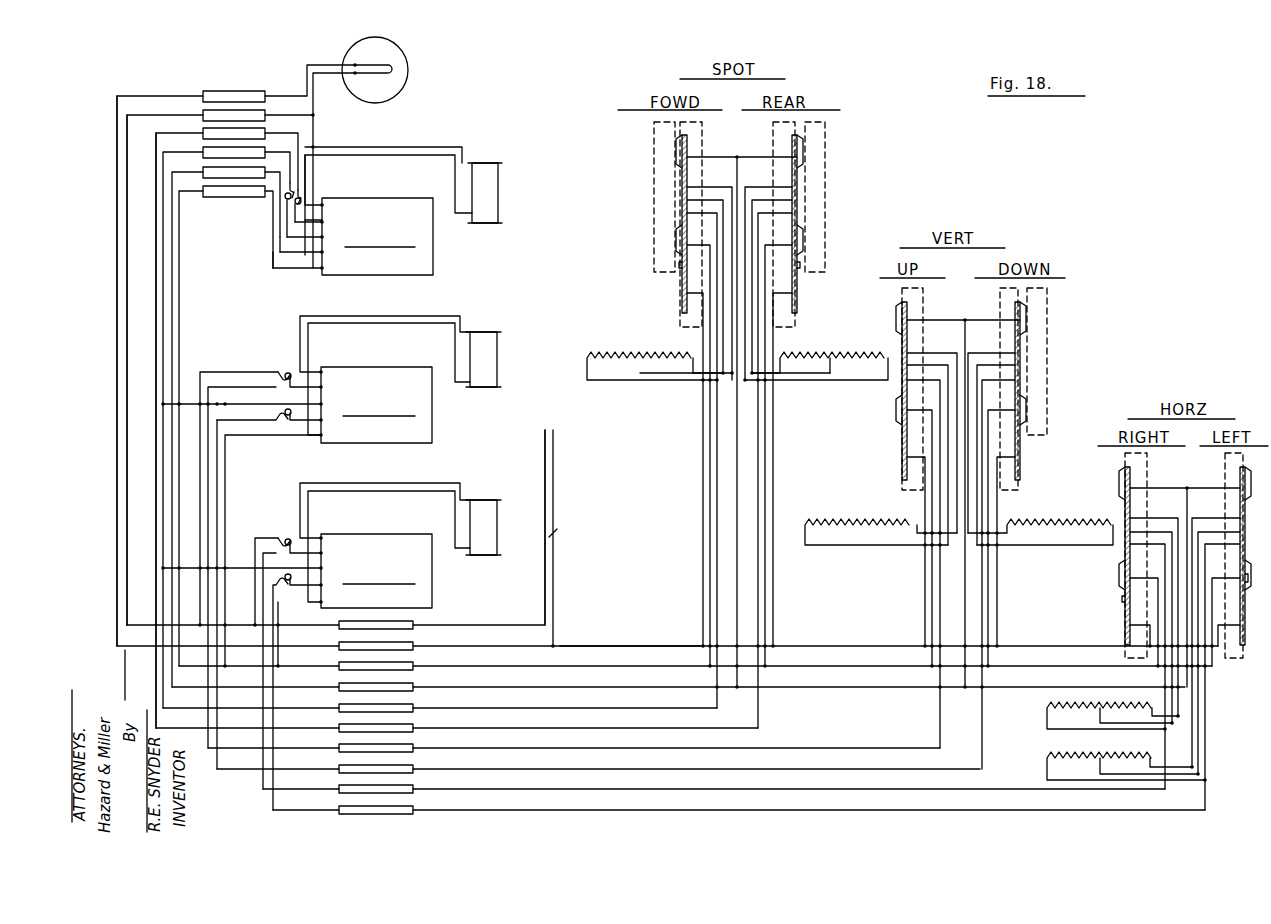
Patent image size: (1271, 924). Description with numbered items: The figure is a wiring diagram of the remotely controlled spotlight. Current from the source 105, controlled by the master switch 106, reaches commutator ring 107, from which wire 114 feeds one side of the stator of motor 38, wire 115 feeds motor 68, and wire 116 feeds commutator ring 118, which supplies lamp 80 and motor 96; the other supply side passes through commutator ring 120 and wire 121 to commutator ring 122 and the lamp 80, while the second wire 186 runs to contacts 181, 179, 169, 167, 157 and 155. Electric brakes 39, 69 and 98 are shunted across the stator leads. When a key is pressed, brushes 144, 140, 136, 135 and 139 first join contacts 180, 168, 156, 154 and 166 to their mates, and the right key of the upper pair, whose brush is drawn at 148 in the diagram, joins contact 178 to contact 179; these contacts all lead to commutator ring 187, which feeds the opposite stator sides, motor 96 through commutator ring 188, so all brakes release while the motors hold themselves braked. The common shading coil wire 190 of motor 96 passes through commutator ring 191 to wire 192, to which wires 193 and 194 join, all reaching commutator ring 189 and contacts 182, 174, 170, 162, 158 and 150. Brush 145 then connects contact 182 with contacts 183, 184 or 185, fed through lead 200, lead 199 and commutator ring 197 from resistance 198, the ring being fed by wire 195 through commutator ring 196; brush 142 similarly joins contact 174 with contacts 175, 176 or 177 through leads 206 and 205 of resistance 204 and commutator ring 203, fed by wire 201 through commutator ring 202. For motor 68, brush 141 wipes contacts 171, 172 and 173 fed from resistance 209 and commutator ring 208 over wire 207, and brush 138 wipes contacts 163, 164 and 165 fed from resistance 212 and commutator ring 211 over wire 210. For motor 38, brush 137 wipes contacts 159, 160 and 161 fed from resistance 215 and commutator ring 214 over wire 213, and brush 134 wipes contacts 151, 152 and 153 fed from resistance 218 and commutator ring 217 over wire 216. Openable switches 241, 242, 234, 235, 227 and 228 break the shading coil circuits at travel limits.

The lamp 80 is at (404, 80).
The commutator ring 122 is at (250, 94).
The commutator ring 118 is at (256, 116).
The commutator ring 196 is at (208, 132).
The commutator ring 191 is at (258, 156).
The commutator ring 202 is at (213, 175).
The commutator ring 188 is at (213, 193).
The motor 96 is at (433, 264).
The electric brake 98 is at (490, 198).
The wire 195 is at (310, 184).
The openable switch 241 is at (283, 200).
The openable switch 242 is at (293, 206).
The common wire 190 is at (282, 244).
The wire 201 is at (292, 262).
The motor 68 is at (432, 430).
The electric brake 69 is at (492, 364).
The wire 115 is at (218, 370).
The wire 207 is at (236, 385).
The openable switch 234 is at (289, 370).
The wire 193 is at (262, 404).
The openable switch 235 is at (288, 418).
The wire 210 is at (226, 494).
The motor 38 is at (416, 536).
The electric brake 39 is at (492, 520).
The wire 114 is at (258, 537).
The wire 213 is at (272, 550).
The openable switch 227 is at (294, 542).
The common wire 194 is at (232, 566).
The openable switch 228 is at (282, 582).
The wire 216 is at (274, 613).
The wire 192 is at (166, 326).
The wire 116 is at (116, 374).
The wire 121 is at (116, 552).
The commutator ring 107 is at (404, 628).
The commutator ring 120 is at (404, 649).
The commutator ring 187 is at (404, 669).
The commutator ring 189 is at (404, 690).
The commutator ring 197 is at (404, 711).
The commutator ring 203 is at (404, 731).
The commutator ring 208 is at (404, 751).
The commutator ring 211 is at (404, 772).
The commutator ring 214 is at (404, 792).
The commutator ring 217 is at (404, 813).
The source of electric current 105 is at (556, 456).
The master switch 106 is at (560, 542).
The second wire 186 is at (640, 648).
The contact 181 is at (680, 284).
The brush 145 is at (676, 140).
The contact 182 is at (678, 158).
The contact 183 is at (678, 187).
The contact 184 is at (678, 200).
The contact 185 is at (678, 213).
The brush 144 is at (676, 240).
The contact 180 is at (676, 264).
The resistance 198 is at (637, 352).
The lead 199 is at (648, 375).
The lead 200 is at (698, 375).
The contact 179 is at (800, 295).
The brush 142 is at (803, 145).
The contact 174 is at (800, 162).
The contact 175 is at (800, 186).
The contact 176 is at (800, 200).
The contact 177 is at (800, 214).
The contact 148 is at (804, 238).
The contact 178 is at (802, 264).
The resistance 204 is at (868, 352).
The lead 205 is at (830, 360).
The lead 206 is at (784, 366).
The contact 169 is at (900, 454).
The brush 141 is at (896, 314).
The contact 170 is at (906, 318).
The contact 171 is at (906, 350).
The contact 172 is at (906, 364).
The contact 173 is at (906, 378).
The brush 140 is at (896, 408).
The contact 168 is at (900, 424).
The resistance 209 is at (862, 520).
The contact 167 is at (1022, 452).
The brush 138 is at (1026, 310).
The contact 162 is at (1022, 322).
The contact 163 is at (1022, 352).
The contact 164 is at (1022, 364).
The contact 165 is at (1022, 380).
The brush 139 is at (1026, 404).
The contact 166 is at (1022, 418).
The resistance 212 is at (1062, 520).
The contact 157 is at (1122, 633).
The brush 137 is at (1118, 476).
The contact 158 is at (1132, 482).
The contact 160 is at (1132, 516).
The contact 161 is at (1132, 532).
The contact 159 is at (1124, 520).
The contact 156 is at (1122, 578).
The brush 136 is at (1120, 600).
The resistance 215 is at (1044, 712).
The resistance 218 is at (1044, 758).
The contact 155 is at (1238, 624).
The brush 134 is at (1238, 482).
The contact 150 is at (1238, 508).
The contact 151 is at (1238, 522).
The contact 152 is at (1238, 536).
The contact 153 is at (1240, 562).
The brush 135 is at (1242, 578).
The contact 154 is at (1240, 596).